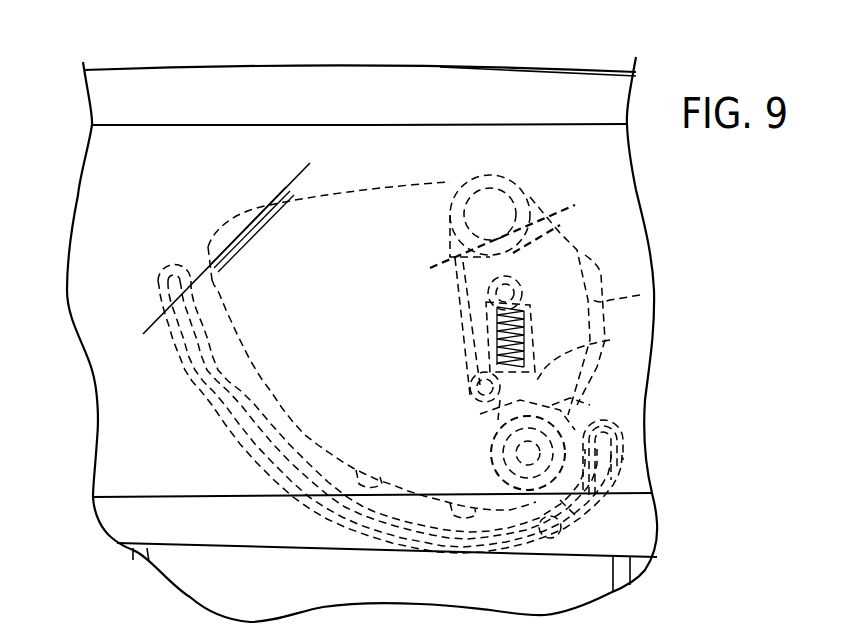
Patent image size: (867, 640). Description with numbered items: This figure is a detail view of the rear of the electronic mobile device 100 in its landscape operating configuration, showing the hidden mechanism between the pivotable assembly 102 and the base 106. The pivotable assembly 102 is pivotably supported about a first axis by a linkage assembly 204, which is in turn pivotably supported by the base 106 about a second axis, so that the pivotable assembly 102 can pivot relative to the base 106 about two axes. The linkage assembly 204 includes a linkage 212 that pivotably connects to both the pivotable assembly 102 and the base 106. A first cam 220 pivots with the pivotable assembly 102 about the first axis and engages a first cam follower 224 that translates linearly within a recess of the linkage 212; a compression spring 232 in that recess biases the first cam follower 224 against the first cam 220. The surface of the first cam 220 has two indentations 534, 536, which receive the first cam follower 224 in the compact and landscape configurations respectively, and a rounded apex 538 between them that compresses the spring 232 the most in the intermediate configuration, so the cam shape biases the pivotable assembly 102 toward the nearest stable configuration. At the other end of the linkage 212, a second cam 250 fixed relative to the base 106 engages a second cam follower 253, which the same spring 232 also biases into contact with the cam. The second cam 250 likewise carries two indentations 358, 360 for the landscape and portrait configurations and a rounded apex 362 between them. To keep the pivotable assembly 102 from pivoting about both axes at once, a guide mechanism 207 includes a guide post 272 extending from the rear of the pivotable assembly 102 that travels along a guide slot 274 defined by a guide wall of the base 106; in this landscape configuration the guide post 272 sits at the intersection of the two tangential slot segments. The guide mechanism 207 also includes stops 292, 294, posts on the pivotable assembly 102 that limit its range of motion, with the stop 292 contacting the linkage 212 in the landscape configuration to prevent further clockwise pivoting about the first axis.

The electronic mobile device 100 is at (745, 348).
The pivotable assembly 102 is at (586, 72).
The base 106 is at (628, 572).
The linkage assembly 204 is at (604, 247).
The guide mechanism 207 is at (600, 519).
The linkage 212 is at (640, 295).
The first cam 220 is at (490, 462).
The first cam follower 224 is at (610, 340).
The compression spring 232 is at (473, 352).
The second cam 250 is at (529, 194).
The second cam follower 253 is at (487, 292).
The guide post 272 is at (559, 547).
The guide slot 274 is at (271, 444).
The stop 292 is at (518, 295).
The stop 294 is at (470, 388).
The indentation 358 is at (518, 220).
The indentation 360 is at (450, 212).
The rounded apex 362 is at (455, 262).
The indentation 534 is at (623, 448).
The indentation 536 is at (480, 414).
The rounded apex 538 is at (578, 401).